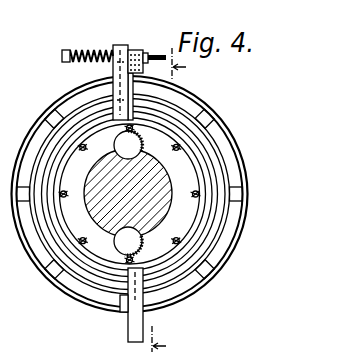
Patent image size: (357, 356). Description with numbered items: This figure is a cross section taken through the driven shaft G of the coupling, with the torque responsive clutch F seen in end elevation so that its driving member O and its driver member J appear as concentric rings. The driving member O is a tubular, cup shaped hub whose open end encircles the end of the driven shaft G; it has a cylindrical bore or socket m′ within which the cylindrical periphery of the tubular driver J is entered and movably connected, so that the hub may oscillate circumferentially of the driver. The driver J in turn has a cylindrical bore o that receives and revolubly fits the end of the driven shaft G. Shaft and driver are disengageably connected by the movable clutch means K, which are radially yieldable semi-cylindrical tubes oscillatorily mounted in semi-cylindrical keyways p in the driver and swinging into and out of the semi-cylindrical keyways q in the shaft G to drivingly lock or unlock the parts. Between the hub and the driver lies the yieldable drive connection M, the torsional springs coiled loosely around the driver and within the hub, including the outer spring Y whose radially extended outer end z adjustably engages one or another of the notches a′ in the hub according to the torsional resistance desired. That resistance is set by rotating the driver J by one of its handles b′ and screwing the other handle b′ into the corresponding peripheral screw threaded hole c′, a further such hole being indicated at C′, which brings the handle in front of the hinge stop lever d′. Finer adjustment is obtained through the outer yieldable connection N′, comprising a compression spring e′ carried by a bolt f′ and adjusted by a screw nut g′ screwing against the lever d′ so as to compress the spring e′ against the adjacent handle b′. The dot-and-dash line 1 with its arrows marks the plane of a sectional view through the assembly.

The torque responsive clutch F is at (226, 122).
The driving member O is at (177, 290).
The notches a′ is at (178, 98).
The cylindrical bore or socket m′ is at (212, 252).
The outer spring Y is at (58, 140).
The driver member J is at (129, 194).
The driven shaft G is at (130, 194).
The yieldable drive connection M is at (130, 194).
The radially extended outer end z is at (213, 105).
The semi-cylindrical keyways q is at (112, 166).
The movable clutch means K is at (141, 146).
The peripheral hole C′ is at (126, 256).
The semi-cylindrical keyways p is at (115, 146).
The cylindrical bore o is at (80, 202).
The screw threaded holes c′ is at (176, 238).
The handles b′ is at (113, 92).
The outer yieldable connection N′ is at (88, 69).
The hinge stop lever d′ is at (137, 50).
The screw nut g′ is at (146, 54).
The compression spring e′ is at (99, 52).
The bolt f′ is at (62, 56).
The section line 1- 1 is at (169, 200).